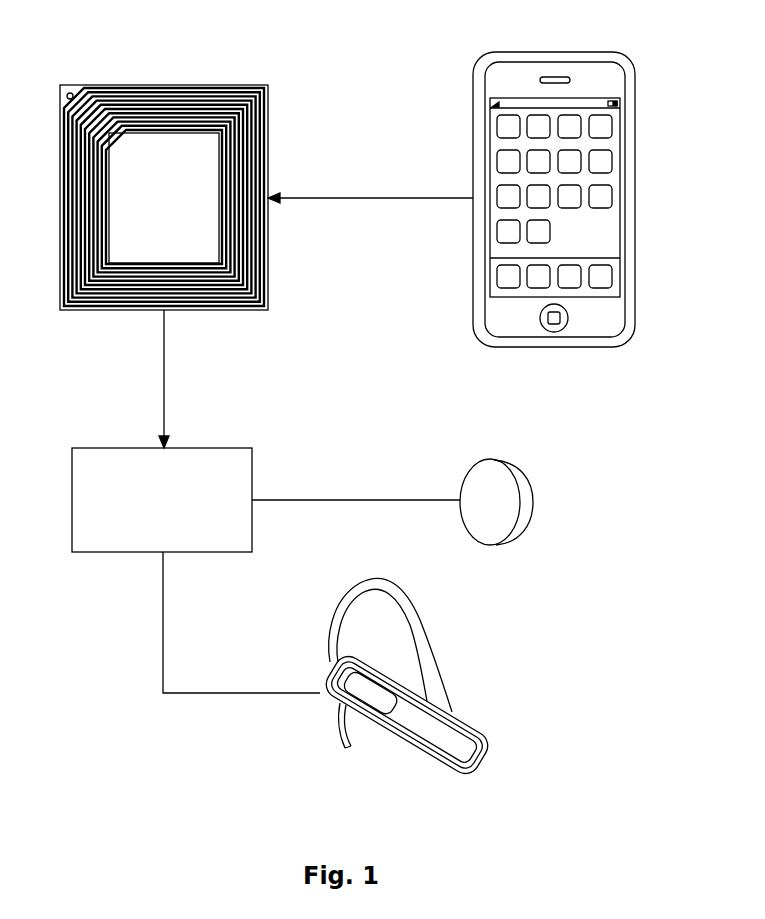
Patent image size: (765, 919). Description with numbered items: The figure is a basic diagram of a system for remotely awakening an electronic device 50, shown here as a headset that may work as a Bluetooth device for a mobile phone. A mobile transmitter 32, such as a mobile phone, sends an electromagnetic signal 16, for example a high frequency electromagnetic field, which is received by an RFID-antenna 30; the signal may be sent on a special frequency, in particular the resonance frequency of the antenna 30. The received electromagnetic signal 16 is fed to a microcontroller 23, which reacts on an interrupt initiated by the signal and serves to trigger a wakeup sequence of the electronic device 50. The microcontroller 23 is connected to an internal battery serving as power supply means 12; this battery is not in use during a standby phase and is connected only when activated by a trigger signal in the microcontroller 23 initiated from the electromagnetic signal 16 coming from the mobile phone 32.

The RFID-antenna 30 is at (163, 85).
The mobile transmitter 32 is at (553, 51).
The electromagnetic signal 16 is at (368, 198).
The microcontroller 23 is at (72, 498).
The power supply means 12 is at (487, 460).
The electronic device 50 is at (399, 746).